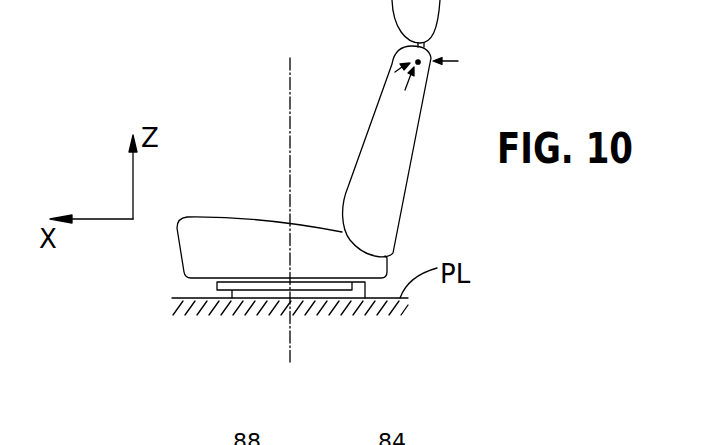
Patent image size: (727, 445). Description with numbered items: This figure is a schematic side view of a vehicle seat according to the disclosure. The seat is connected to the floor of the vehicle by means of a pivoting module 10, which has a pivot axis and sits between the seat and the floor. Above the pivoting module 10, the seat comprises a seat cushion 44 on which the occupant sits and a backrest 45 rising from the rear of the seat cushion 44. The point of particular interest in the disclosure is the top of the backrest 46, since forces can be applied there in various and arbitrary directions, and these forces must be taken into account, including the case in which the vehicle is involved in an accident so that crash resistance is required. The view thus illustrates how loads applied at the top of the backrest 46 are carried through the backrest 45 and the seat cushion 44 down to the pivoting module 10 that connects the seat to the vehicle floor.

The pivoting module 10 is at (196, 288).
The seat cushion 44 is at (223, 217).
The backrest 45 is at (390, 185).
The top of the backrest 46 is at (422, 63).